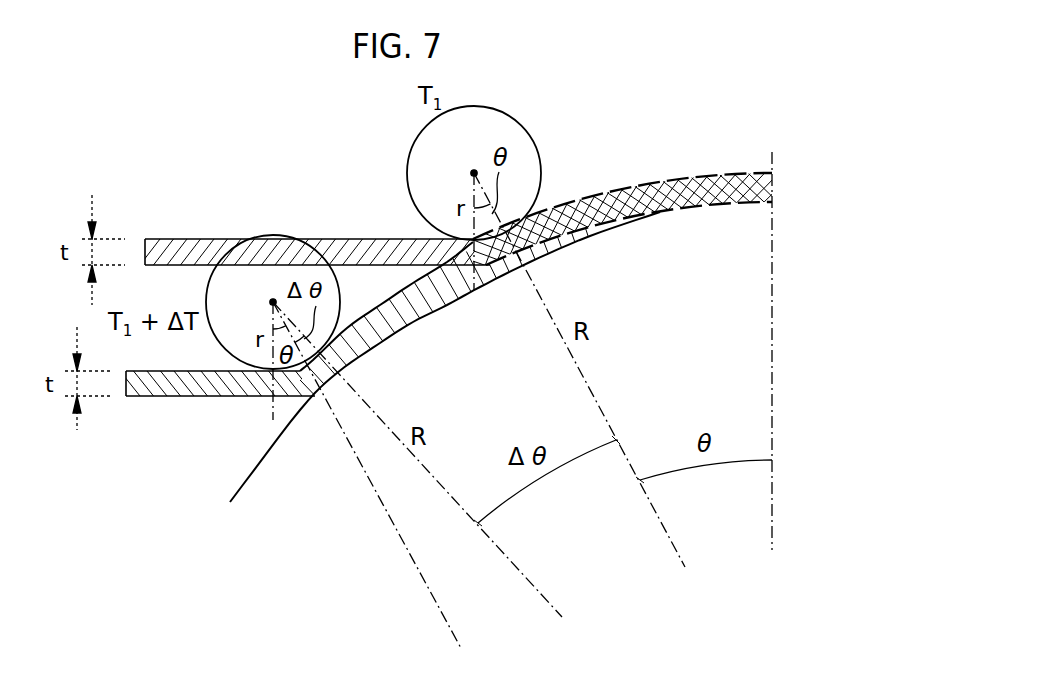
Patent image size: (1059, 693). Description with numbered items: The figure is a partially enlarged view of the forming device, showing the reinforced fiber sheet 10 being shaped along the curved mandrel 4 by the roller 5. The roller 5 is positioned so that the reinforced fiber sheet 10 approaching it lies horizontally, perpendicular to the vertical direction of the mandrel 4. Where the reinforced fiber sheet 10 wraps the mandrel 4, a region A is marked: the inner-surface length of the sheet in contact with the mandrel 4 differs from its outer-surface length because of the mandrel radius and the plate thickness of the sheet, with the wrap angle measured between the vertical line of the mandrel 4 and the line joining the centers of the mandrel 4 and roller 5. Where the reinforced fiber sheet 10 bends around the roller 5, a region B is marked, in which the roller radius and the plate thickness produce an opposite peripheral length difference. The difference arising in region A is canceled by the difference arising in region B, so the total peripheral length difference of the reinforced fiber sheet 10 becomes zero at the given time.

The mandrel 4 is at (245, 476).
The roller 5 is at (272, 238).
The reinforced fiber sheet 10 is at (703, 176).
The region A is at (648, 184).
The region B is at (497, 268).